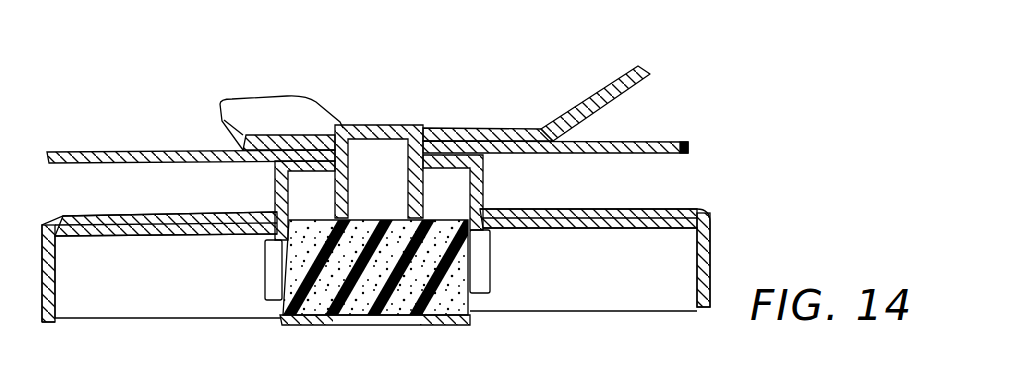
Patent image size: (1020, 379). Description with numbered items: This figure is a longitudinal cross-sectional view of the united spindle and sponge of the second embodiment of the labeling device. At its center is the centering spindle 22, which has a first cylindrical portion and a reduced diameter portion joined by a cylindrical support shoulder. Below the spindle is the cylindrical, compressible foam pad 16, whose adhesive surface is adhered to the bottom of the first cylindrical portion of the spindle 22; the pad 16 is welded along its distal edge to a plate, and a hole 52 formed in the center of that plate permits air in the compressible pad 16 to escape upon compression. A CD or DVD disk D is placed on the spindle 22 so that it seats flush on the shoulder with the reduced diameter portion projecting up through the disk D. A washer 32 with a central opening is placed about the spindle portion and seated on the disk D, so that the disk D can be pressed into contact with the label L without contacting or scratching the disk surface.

The compressible foam pad 16 is at (415, 283).
The centering spindle 22 is at (473, 188).
The washer 32 is at (465, 130).
The hole 52 is at (297, 325).
The disk D is at (657, 140).
The label L is at (727, 168).